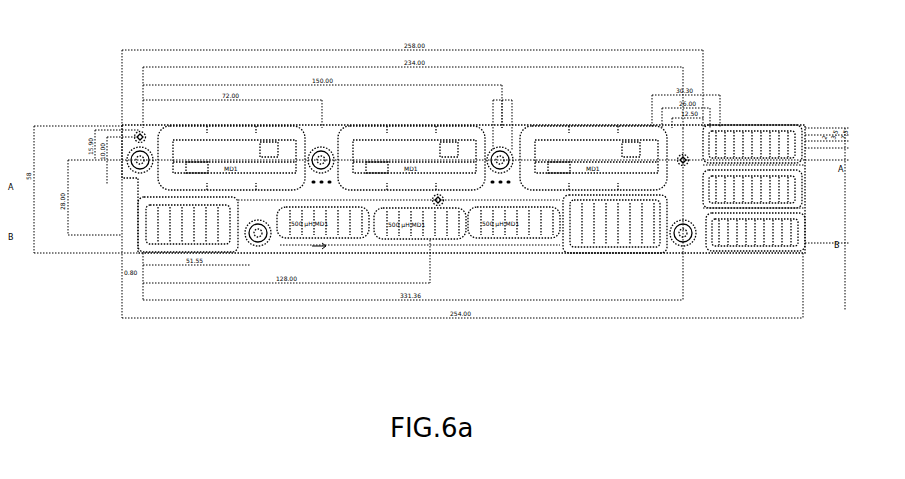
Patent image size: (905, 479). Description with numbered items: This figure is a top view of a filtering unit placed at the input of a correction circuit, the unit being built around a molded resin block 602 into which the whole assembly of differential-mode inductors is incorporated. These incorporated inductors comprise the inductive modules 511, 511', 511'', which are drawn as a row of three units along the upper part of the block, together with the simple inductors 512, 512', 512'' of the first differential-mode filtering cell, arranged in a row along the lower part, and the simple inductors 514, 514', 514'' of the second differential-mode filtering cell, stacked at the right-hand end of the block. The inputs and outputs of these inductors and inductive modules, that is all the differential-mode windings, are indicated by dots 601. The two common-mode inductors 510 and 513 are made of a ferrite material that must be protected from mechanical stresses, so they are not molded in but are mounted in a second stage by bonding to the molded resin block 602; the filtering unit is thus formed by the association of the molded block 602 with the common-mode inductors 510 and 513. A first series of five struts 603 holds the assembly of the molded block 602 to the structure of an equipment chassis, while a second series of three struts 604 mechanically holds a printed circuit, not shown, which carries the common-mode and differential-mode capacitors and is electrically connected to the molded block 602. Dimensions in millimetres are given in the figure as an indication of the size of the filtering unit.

The common-mode inductor 510 is at (213, 227).
The inductive module 511 is at (231, 104).
The inductive module 511' is at (411, 103).
The inductive module 511'' is at (583, 103).
The simple inductor 512 is at (315, 283).
The simple inductor 512' is at (414, 284).
The simple inductor 512'' is at (527, 283).
The common-mode inductor 513 is at (583, 228).
The simple inductor 514 is at (789, 174).
The simple inductor 514' is at (793, 226).
The simple inductor 514'' is at (778, 282).
The dots 601 is at (312, 246).
The molded block 602 is at (150, 178).
The strut 603 is at (132, 153).
The strut 604 is at (135, 132).